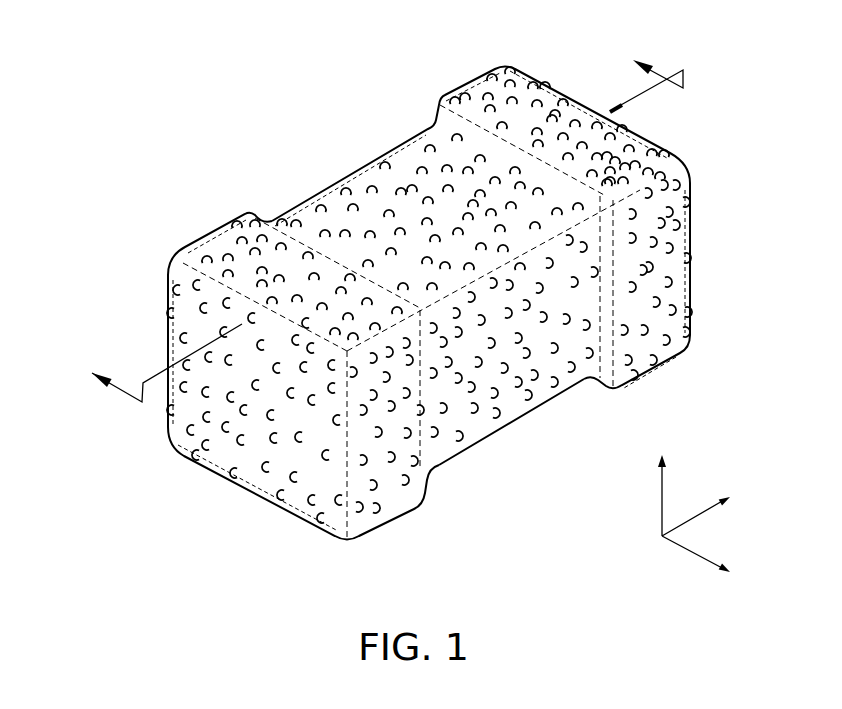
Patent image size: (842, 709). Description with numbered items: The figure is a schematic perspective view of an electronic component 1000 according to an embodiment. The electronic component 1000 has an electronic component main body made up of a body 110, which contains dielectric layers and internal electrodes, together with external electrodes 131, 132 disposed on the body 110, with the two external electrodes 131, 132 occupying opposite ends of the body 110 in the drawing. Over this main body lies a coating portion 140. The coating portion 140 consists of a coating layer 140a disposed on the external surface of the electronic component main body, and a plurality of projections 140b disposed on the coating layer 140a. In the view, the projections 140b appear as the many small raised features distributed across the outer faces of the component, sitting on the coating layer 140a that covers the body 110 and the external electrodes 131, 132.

The electronic component 1000 is at (320, 37).
The body 110 is at (305, 212).
The external electrode 131 is at (222, 232).
The external electrode 132 is at (482, 85).
The coating portion 140 is at (412, 88).
The coating layer 140a is at (372, 170).
The projections 140b is at (390, 175).